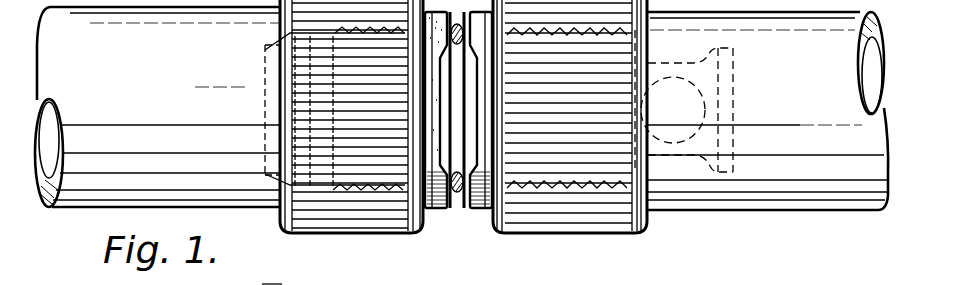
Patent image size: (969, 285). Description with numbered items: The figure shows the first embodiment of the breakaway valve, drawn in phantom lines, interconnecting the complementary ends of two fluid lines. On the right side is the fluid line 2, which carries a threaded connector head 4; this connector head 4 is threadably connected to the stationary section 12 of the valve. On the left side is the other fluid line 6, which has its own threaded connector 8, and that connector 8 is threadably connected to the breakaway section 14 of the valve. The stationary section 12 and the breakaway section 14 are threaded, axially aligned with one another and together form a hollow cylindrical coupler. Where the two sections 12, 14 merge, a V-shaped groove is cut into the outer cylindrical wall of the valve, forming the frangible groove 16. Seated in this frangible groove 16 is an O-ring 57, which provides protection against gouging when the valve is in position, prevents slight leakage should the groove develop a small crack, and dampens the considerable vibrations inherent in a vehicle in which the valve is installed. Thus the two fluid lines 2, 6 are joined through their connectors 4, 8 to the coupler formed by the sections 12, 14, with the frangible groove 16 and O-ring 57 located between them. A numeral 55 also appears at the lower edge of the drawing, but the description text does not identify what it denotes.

The fluid line 2 is at (806, 212).
The threaded connector head 4 is at (577, 233).
The fluid line 6 is at (93, 210).
The threaded connector 8 is at (362, 233).
The stationary section 12 is at (598, 185).
The breakaway section 14 is at (335, 193).
The frangible groove 16 is at (442, 212).
The element 55 is at (257, 282).
The O-ring 57 is at (461, 212).